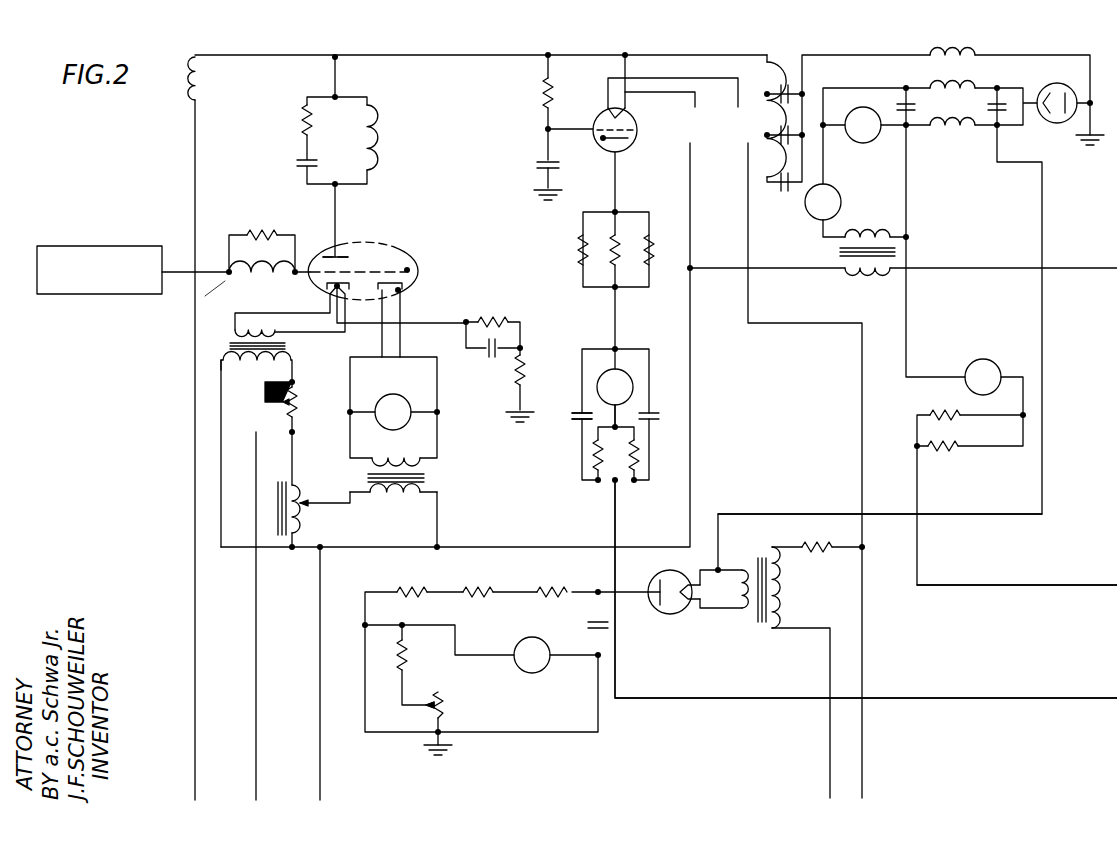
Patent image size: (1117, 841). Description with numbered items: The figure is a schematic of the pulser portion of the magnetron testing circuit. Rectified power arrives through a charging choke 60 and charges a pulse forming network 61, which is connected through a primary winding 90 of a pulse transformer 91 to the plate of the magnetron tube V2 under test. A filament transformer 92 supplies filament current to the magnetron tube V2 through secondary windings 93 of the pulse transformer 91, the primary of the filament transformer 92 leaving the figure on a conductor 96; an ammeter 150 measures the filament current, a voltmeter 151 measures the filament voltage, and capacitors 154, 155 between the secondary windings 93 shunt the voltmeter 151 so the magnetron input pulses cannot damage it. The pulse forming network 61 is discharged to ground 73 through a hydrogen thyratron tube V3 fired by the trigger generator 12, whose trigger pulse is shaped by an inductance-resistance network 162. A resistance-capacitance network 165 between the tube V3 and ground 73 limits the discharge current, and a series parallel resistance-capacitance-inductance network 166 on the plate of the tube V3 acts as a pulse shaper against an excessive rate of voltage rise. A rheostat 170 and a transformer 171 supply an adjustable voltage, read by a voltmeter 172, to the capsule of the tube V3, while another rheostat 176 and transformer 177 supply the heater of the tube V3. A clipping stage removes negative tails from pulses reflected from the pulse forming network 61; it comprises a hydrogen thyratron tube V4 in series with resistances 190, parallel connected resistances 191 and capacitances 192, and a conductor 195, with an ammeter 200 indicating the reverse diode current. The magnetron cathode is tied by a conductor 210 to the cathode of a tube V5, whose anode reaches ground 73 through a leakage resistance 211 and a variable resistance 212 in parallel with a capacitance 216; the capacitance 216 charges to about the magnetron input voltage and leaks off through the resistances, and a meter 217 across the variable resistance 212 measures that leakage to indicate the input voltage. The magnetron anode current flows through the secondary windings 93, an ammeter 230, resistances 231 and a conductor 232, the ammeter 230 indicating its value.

The trigger generator 12 is at (104, 246).
The charging choke 60 is at (185, 95).
The pulse forming network 61 is at (783, 78).
The ground 73 is at (1082, 145).
The primary winding 90 is at (955, 48).
The pulse transformer 91 is at (950, 135).
The filament transformer 92 is at (840, 255).
The secondary windings 93 is at (962, 88).
The conductor 96 is at (1116, 784).
The ammeter 150 is at (805, 205).
The voltmeter 151 is at (866, 143).
The capacitor 154 is at (900, 100).
The capacitor 155 is at (1003, 115).
The inductance-resistance network 162 is at (262, 235).
The resistance-capacitance network 165 is at (496, 320).
The series parallel resistance-capacitance-inductance network 166 is at (380, 128).
The rheostat 170 is at (272, 535).
The transformer 171 is at (422, 476).
The voltmeter 172 is at (396, 387).
The rheostat 176 is at (296, 397).
The transformer 177 is at (287, 346).
The resistances 190 is at (583, 240).
The parallel connected resistances 191 is at (598, 462).
The capacitances 192 is at (578, 420).
The conductor 195 is at (616, 520).
The ammeter 200 is at (597, 388).
The conductor 210 is at (808, 514).
The leakage resistance 211 is at (478, 590).
The variable resistance 212 is at (445, 702).
The capacitance 216 is at (590, 624).
The meter 217 is at (538, 674).
The ammeter 230 is at (983, 358).
The resistances 231 is at (932, 446).
The conductor 232 is at (1116, 764).
The magnetron tube V2 is at (1050, 82).
The hydrogen thyratron tube V3 is at (398, 255).
The hydrogen thyratron tube V4 is at (627, 144).
The tube V5 is at (668, 615).